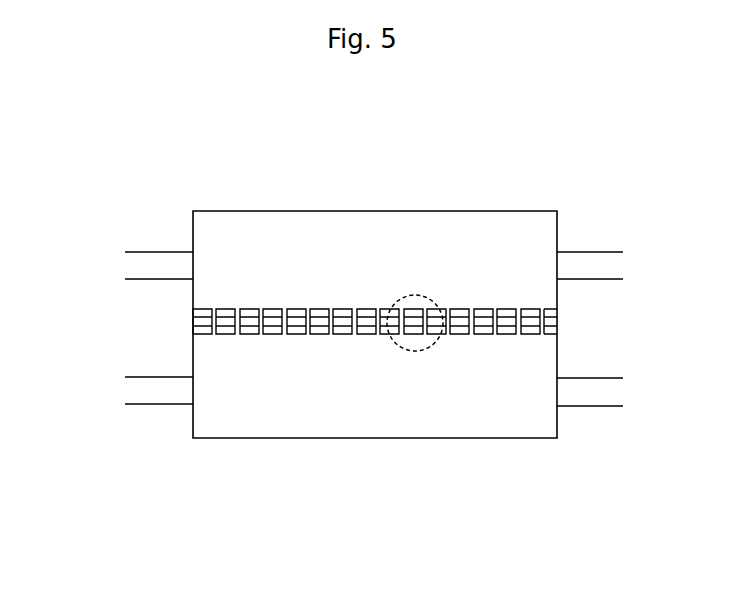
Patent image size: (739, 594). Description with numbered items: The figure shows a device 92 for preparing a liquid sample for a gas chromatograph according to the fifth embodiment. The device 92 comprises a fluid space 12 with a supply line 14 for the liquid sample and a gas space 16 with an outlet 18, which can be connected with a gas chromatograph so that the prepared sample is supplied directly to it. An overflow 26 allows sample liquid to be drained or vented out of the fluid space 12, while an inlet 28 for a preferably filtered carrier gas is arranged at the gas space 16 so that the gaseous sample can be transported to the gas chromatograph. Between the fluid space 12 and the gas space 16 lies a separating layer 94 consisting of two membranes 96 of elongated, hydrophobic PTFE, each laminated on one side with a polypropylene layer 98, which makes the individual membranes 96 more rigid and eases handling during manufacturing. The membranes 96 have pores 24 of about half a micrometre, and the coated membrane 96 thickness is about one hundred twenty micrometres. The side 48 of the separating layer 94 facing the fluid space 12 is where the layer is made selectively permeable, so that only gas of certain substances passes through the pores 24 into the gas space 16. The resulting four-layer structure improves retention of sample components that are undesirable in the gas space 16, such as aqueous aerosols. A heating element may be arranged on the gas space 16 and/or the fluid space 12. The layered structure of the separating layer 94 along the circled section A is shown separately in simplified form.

The fluid space 12 is at (414, 438).
The supply line 14 is at (150, 404).
The gas space 16 is at (528, 211).
The outlet 18 is at (572, 250).
The pores 24 is at (212, 334).
The overflow 26 is at (573, 408).
The inlet 28 is at (156, 252).
The side 48 is at (297, 350).
The device 92 is at (135, 162).
The separating layer 94 is at (466, 300).
The membranes 96 is at (193, 323).
The polypropylene layer 98 is at (270, 310).
The section A is at (424, 352).